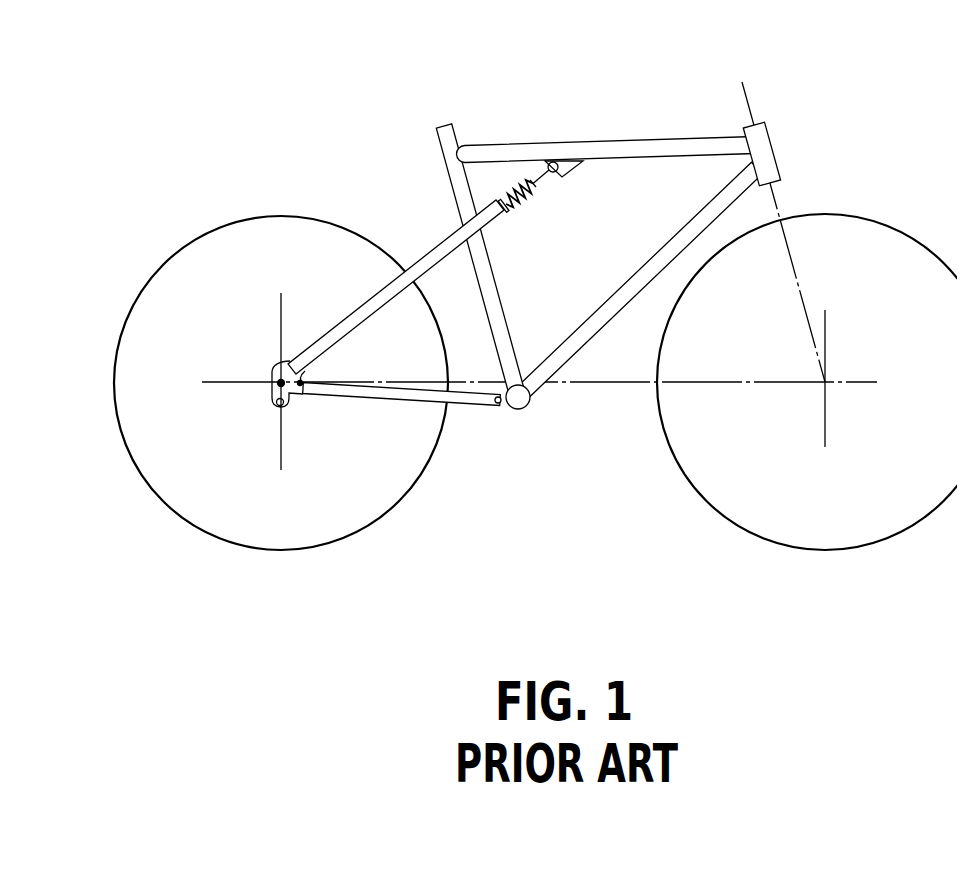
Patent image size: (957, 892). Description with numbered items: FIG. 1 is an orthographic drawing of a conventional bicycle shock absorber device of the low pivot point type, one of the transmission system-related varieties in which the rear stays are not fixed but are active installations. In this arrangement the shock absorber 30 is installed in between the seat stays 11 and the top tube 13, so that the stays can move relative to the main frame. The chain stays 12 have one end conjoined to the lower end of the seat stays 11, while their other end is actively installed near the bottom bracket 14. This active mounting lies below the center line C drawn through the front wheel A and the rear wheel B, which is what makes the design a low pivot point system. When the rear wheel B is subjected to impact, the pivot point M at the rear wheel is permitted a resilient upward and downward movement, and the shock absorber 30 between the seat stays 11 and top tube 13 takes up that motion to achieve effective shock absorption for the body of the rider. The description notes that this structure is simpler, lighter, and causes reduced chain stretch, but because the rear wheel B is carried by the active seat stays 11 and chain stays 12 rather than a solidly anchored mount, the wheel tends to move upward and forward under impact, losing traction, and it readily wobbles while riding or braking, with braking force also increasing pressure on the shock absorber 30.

The seat stays 11 is at (427, 257).
The chain stays 12 is at (387, 388).
The top tube 13 is at (631, 141).
The bottom bracket 14 is at (528, 408).
The shock absorber 30 is at (505, 180).
The pivot point M is at (497, 404).
The front wheel A is at (732, 520).
The rear wheel B is at (158, 492).
The center line C is at (703, 382).